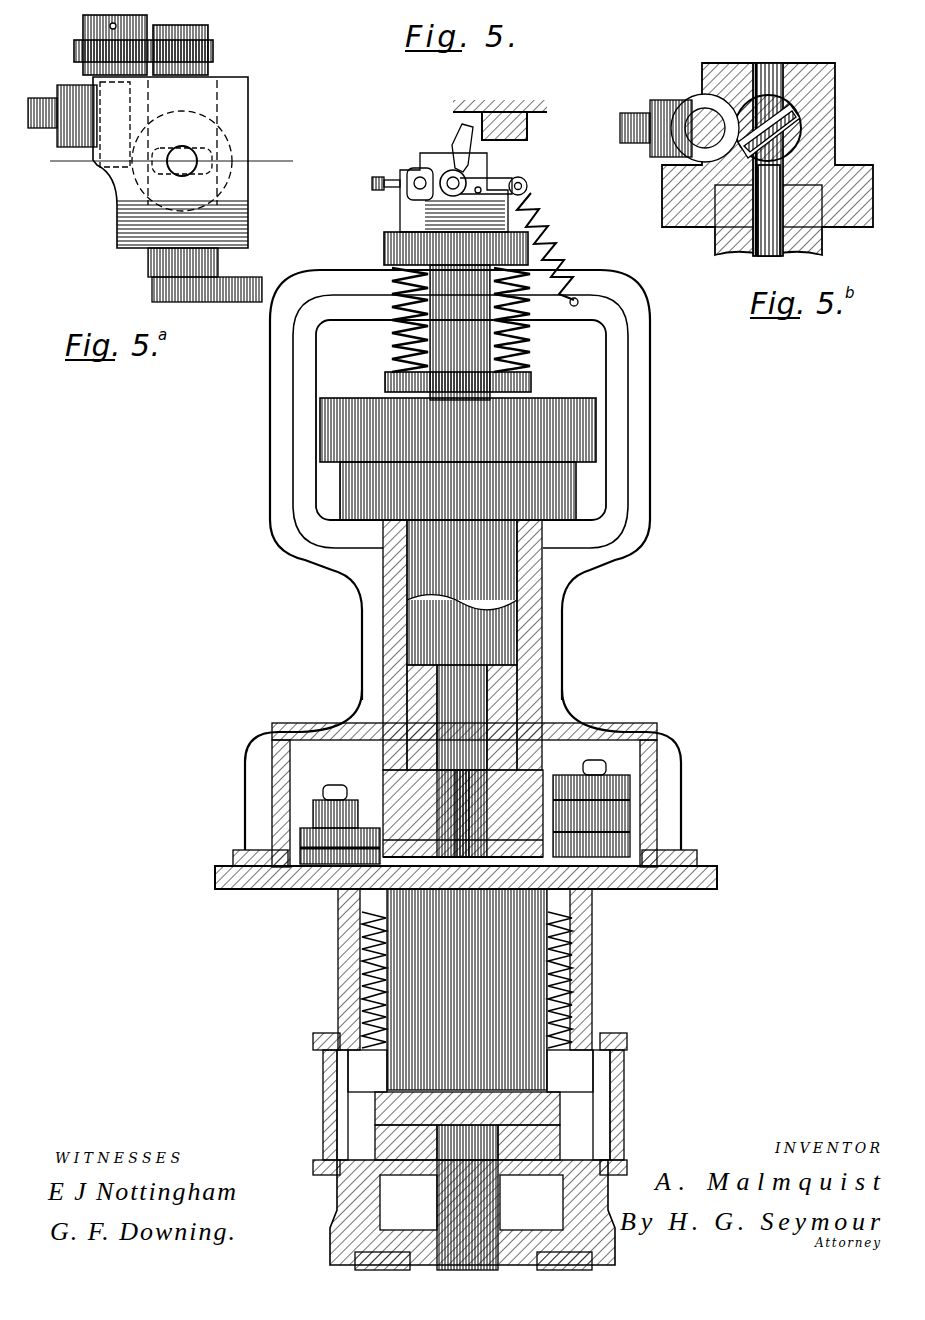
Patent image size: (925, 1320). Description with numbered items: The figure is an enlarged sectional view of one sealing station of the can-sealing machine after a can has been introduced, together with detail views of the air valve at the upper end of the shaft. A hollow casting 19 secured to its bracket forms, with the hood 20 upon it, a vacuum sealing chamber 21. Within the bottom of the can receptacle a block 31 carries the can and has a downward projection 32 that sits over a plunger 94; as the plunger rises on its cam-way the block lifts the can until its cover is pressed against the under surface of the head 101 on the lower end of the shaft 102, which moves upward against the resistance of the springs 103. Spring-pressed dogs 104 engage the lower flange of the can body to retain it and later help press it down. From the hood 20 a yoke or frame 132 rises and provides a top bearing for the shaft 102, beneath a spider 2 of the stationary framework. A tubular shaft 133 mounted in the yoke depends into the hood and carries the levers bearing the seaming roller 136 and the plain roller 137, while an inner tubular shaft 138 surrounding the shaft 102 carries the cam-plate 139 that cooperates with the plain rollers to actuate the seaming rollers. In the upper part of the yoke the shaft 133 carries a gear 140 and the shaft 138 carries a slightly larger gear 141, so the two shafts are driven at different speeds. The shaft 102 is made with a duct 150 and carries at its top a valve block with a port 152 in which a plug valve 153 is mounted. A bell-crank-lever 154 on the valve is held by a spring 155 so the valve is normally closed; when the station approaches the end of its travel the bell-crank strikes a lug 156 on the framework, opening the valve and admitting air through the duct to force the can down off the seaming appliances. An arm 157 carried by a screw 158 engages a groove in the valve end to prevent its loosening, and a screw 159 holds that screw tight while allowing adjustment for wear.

In FIG. 5, the spider 2 is at (509, 108).
In FIG. 5, the hollow casting 19 is at (338, 954).
In FIG. 5, the hood 20 is at (309, 724).
In FIG. 5, the sealing chamber 21 is at (396, 905).
In FIG. 5, the block 31 is at (378, 1112).
In FIG. 5, the downward projection 32 is at (503, 1148).
In FIG. 5, the plunger 94 is at (437, 1194).
In FIG. 5, the head 101 is at (520, 857).
In FIG. 5, the shaft 102 is at (482, 674).
In FIG. 5A, the shaft 102 is at (249, 205).
In FIG. 5B, the shaft 102 is at (824, 250).
In FIG. 5, the springs 103 is at (392, 339).
In FIG. 5, the spring-pressed dogs 104 is at (470, 1071).
In FIG. 5, the yoke or frame 132 is at (650, 506).
In FIG. 5, the tubular shaft 133 is at (405, 633).
In FIG. 5, the seaming roller 136 is at (300, 838).
In FIG. 5, the plain roller 137 is at (630, 812).
In FIG. 5, the tubular shaft 138 is at (390, 680).
In FIG. 5, the cam-plate 139 is at (383, 792).
In FIG. 5, the gear 140 is at (340, 480).
In FIG. 5, the gear 141 is at (568, 398).
In FIG. 5, the duct 150 is at (457, 326).
In FIG. 5B, the duct 150 is at (770, 256).
In FIG. 5A, the port 152 is at (184, 147).
In FIG. 5B, the port 152 is at (772, 57).
In FIG. 5A, the plug valve 153 is at (215, 152).
In FIG. 5B, the plug valve 153 is at (801, 111).
In FIG. 5, the bell-crank-lever 154 is at (456, 165).
In FIG. 5A, the bell-crank-lever 154 is at (150, 268).
In FIG. 5, the spring 155 is at (540, 212).
In FIG. 5, the lug 156 is at (530, 136).
In FIG. 5A, the arm 157 is at (213, 51).
In FIG. 5B, the arm 157 is at (718, 97).
In FIG. 5A, the screw 158 is at (84, 30).
In FIG. 5B, the screw 158 is at (700, 108).
In FIG. 5, the screw 159 is at (384, 176).
In FIG. 5A, the screw 159 is at (50, 130).
In FIG. 5B, the screw 159 is at (641, 158).